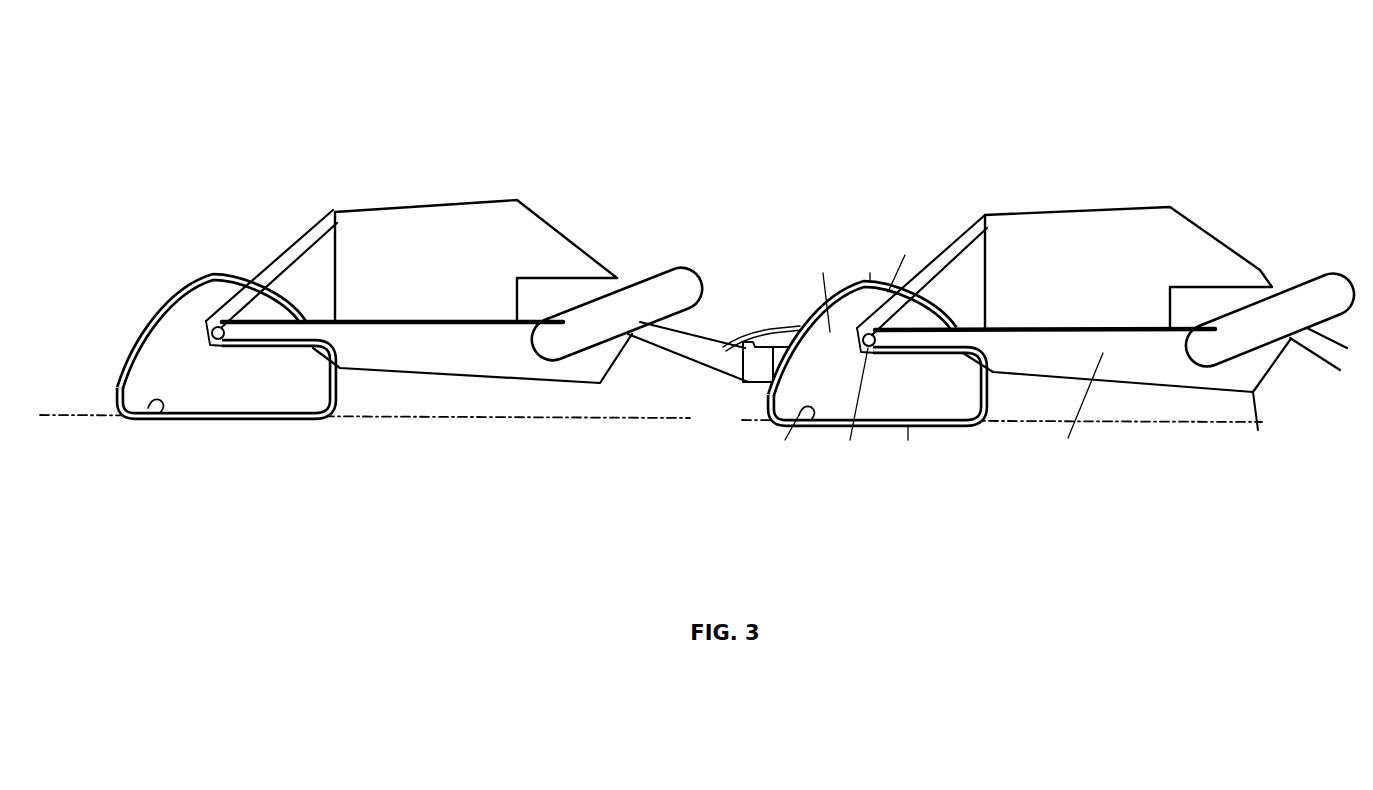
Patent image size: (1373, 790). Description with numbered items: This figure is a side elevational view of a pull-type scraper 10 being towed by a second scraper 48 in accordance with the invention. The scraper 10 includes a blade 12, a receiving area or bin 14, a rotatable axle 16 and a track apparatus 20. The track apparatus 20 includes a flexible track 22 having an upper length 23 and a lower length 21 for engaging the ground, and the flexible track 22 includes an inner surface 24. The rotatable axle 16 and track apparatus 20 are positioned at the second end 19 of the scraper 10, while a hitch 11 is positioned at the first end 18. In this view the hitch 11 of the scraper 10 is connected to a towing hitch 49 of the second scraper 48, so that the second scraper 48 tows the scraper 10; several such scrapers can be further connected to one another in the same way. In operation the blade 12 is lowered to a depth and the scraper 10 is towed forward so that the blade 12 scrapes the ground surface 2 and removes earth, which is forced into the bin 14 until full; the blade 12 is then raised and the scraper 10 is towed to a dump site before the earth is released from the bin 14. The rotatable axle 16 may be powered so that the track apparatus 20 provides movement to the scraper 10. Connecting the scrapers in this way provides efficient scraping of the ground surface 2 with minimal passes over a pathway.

The ground surface 2 is at (685, 418).
The scraper 10 is at (419, 184).
The hitch 11 is at (733, 367).
The blade 12 is at (600, 383).
The receiving area or bin 14 is at (452, 345).
The rotatable axle 16 is at (216, 345).
The first end 18 is at (678, 233).
The second end 19 is at (352, 177).
The track apparatus 20 is at (220, 347).
The lower length 21 is at (260, 422).
The flexible track 22 is at (217, 274).
The upper length 23 is at (243, 262).
The inner surface 24 is at (148, 408).
The second scraper 48 is at (1113, 243).
The towing hitch 49 is at (768, 360).